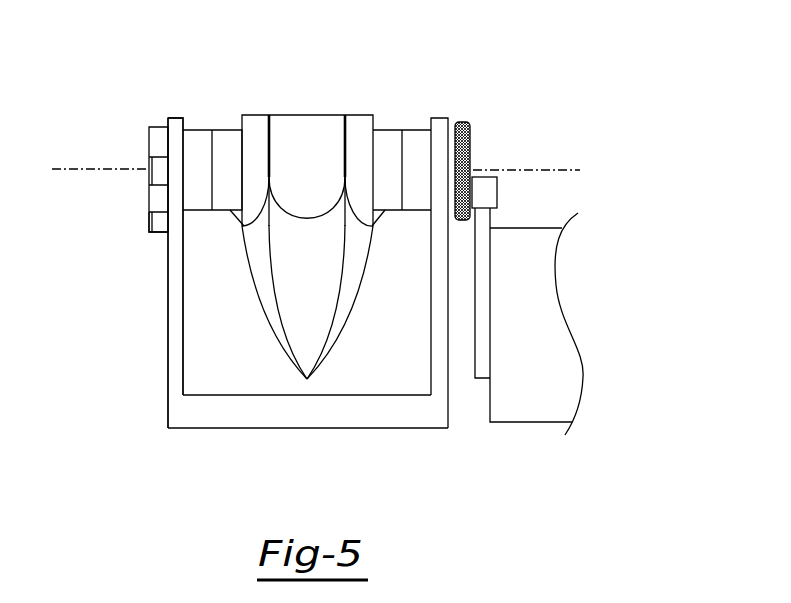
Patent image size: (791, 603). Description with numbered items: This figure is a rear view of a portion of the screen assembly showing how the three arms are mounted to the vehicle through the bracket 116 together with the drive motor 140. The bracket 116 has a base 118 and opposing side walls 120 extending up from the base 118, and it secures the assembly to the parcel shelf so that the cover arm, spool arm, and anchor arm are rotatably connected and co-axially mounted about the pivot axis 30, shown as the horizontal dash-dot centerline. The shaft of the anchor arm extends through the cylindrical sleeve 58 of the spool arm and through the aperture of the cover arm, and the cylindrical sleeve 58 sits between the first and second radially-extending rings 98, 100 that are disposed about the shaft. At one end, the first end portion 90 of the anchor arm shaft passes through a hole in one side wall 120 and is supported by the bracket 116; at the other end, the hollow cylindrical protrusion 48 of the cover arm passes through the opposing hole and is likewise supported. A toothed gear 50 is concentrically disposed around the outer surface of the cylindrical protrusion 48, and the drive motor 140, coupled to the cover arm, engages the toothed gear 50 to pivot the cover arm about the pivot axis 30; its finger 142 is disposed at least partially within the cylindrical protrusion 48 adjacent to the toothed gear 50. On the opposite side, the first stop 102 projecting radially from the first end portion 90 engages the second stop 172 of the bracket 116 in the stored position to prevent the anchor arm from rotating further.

The pivot axis 30 is at (92, 168).
The bracket 116 is at (175, 128).
The first radially-extending ring 98 is at (254, 128).
The cylindrical sleeve 58 is at (307, 128).
The second radially-extending ring 100 is at (358, 128).
The toothed gear 50 is at (465, 122).
The finger 142 is at (488, 192).
The second stop 172 is at (158, 175).
The first stop 102 is at (157, 227).
The first end portion 90 is at (198, 200).
The cylindrical protrusion 48 is at (422, 193).
The side walls 120 is at (175, 377).
The base 118 is at (248, 422).
The drive motor 140 is at (553, 378).